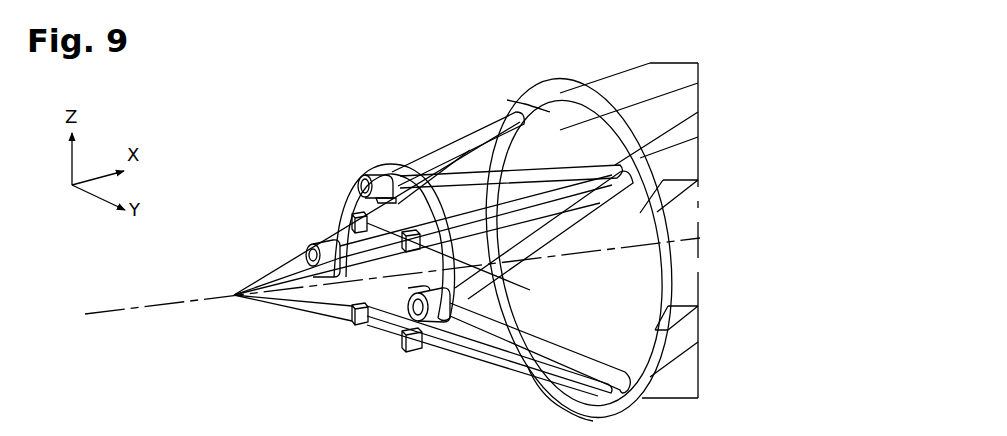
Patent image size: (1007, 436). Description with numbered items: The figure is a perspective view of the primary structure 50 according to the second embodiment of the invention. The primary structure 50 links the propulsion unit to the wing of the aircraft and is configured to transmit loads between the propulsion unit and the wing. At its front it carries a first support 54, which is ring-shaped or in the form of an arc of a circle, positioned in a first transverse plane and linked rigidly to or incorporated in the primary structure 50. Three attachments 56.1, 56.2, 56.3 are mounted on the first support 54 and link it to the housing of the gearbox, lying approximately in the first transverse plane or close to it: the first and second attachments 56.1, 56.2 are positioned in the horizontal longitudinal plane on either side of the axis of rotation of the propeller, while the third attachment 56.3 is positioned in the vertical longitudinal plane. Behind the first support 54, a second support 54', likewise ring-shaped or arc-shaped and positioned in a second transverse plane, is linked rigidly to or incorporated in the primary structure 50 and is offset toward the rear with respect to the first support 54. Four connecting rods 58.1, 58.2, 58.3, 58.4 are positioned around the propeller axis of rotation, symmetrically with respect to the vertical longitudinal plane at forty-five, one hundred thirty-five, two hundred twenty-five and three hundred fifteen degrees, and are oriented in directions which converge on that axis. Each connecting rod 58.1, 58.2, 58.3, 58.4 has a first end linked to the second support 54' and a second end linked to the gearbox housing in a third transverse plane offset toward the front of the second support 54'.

The primary structure 50 is at (676, 74).
The first support 54 is at (363, 222).
The second support 54' is at (611, 248).
The first attachment 56.1 is at (305, 241).
The second attachment 56.2 is at (404, 293).
The third attachment 56.3 is at (379, 173).
The first connecting rod 58.1 is at (455, 158).
The second connecting rod 58.2 is at (550, 205).
The third connecting rod 58.3 is at (484, 362).
The fourth connecting rod 58.4 is at (378, 325).